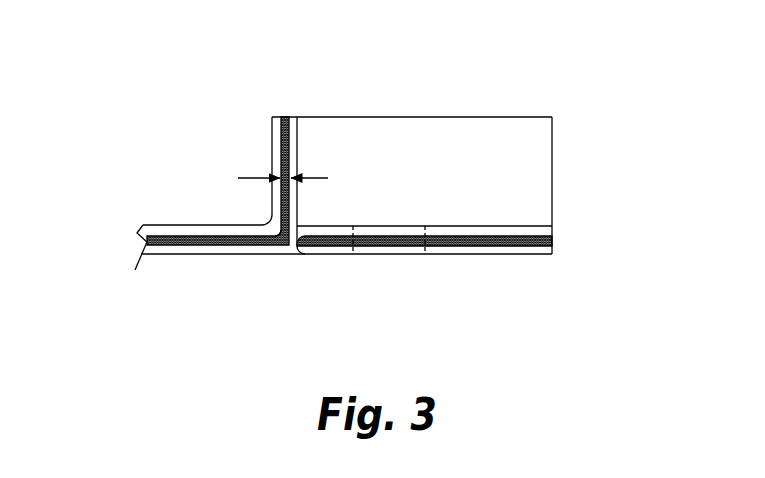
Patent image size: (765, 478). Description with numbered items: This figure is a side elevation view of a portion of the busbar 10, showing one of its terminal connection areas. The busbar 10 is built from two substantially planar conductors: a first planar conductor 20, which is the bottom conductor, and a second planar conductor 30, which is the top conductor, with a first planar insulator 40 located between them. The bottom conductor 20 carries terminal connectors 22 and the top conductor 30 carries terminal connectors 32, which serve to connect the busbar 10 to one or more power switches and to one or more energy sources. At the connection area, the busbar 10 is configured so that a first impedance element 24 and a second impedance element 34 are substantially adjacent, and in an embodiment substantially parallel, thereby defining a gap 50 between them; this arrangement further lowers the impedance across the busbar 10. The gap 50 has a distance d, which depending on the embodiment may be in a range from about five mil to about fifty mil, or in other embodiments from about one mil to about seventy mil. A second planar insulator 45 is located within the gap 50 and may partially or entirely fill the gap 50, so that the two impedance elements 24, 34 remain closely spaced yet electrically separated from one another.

The busbar 10 is at (146, 127).
The first planar conductor 20 is at (496, 263).
The terminal connectors 22 is at (392, 263).
The first impedance element 24 is at (307, 116).
The second planar conductor 30 is at (155, 224).
The terminal connectors 32 is at (394, 220).
The second impedance element 34 is at (272, 116).
The first planar insulator 40 is at (560, 242).
The second planar insulator 45 is at (278, 210).
The gap 50 is at (285, 116).
The distance d is at (281, 170).